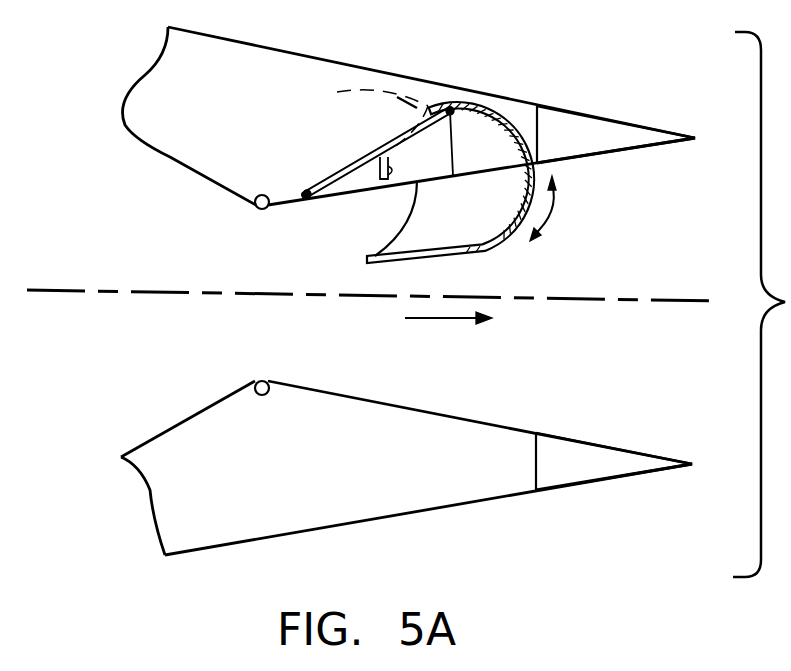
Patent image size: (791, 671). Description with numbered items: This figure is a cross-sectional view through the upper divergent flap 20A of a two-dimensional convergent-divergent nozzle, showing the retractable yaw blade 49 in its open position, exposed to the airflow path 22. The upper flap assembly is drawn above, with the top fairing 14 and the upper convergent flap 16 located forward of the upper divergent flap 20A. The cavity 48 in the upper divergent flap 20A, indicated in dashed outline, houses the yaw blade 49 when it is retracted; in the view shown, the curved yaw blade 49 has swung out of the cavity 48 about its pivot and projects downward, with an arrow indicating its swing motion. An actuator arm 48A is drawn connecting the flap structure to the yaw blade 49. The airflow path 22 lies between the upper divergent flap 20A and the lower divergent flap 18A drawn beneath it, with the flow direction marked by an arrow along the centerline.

The top fairing 14 is at (520, 101).
The upper convergent flap 16 is at (167, 157).
The lower divergent flap 18A is at (553, 490).
The upper divergent flap 20A is at (580, 161).
The airflow path 22 is at (431, 317).
The cavity 48 is at (364, 115).
The actuator arm 48A is at (348, 153).
The yaw blade 49 is at (497, 243).